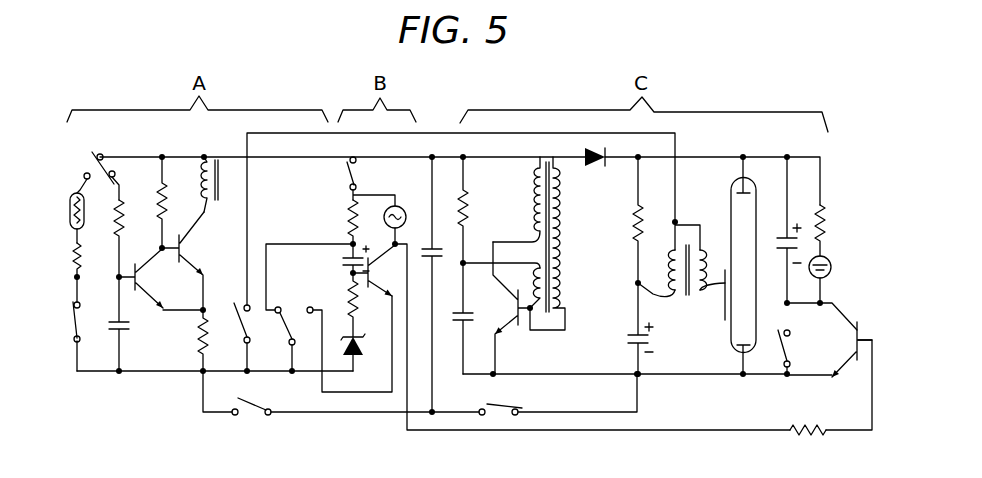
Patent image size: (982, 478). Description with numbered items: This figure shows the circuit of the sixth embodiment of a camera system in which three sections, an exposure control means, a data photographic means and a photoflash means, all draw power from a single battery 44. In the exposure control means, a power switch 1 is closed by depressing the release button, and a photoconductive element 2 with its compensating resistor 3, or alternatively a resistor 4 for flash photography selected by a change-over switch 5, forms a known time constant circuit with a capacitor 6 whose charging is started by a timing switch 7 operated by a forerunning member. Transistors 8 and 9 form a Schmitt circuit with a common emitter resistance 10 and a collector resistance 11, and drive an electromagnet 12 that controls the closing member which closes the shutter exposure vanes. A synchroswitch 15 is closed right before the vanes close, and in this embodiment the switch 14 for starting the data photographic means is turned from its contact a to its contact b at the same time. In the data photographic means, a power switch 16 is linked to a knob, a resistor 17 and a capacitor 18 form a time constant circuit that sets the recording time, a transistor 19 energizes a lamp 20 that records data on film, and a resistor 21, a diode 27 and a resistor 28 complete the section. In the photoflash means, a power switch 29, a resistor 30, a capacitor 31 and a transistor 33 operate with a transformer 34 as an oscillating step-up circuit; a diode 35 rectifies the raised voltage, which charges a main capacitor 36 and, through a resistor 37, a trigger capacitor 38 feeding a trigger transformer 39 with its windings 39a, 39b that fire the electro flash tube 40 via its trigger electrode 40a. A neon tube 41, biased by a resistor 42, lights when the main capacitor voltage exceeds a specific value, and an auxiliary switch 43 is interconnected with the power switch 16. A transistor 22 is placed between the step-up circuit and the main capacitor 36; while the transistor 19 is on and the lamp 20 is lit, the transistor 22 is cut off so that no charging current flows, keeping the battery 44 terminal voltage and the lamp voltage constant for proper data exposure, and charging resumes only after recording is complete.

The power switch 1 is at (251, 419).
The photoconductive element 2 is at (70, 207).
The resistor 3 is at (72, 256).
The resistor 4 is at (123, 215).
The change-over switch 5 is at (99, 154).
The capacitor 6 is at (126, 325).
The timing switch 7 is at (73, 322).
The transistor 8 is at (140, 278).
The transistor 9 is at (182, 249).
The emitter resistance 10 is at (199, 334).
The collector resistance 11 is at (168, 204).
The electromagnet 12 is at (219, 200).
The switch 14 is at (283, 306).
The synchroswitch 15 is at (240, 311).
The power switch 16 is at (357, 174).
The resistor 17 is at (349, 218).
The capacitor 18 is at (346, 262).
The transistor 19 is at (372, 273).
The lamp 20 is at (403, 209).
The resistor 21 is at (820, 432).
The transistor 22 is at (854, 345).
The diode 27 is at (358, 354).
The resistor 28 is at (358, 303).
The power switch 29 is at (499, 396).
The resistor 30 is at (469, 207).
The capacitor 31 is at (458, 316).
The transistor 33 is at (515, 308).
The transformer 34 is at (538, 330).
The diode 35 is at (598, 168).
The main capacitor 36 is at (782, 252).
The resistor 37 is at (633, 232).
The trigger capacitor 38 is at (630, 342).
The trigger transformer 39 is at (688, 234).
The primary winding of trigger transformer 39a is at (665, 298).
The secondary winding of trigger transformer 39b is at (700, 309).
The electro flash tube 40 is at (757, 216).
The trigger electrode of flash tube 40a is at (725, 322).
The neon tube 41 is at (832, 268).
The resistor 42 is at (827, 220).
The auxiliary switch 43 is at (776, 342).
The battery 44 is at (438, 262).